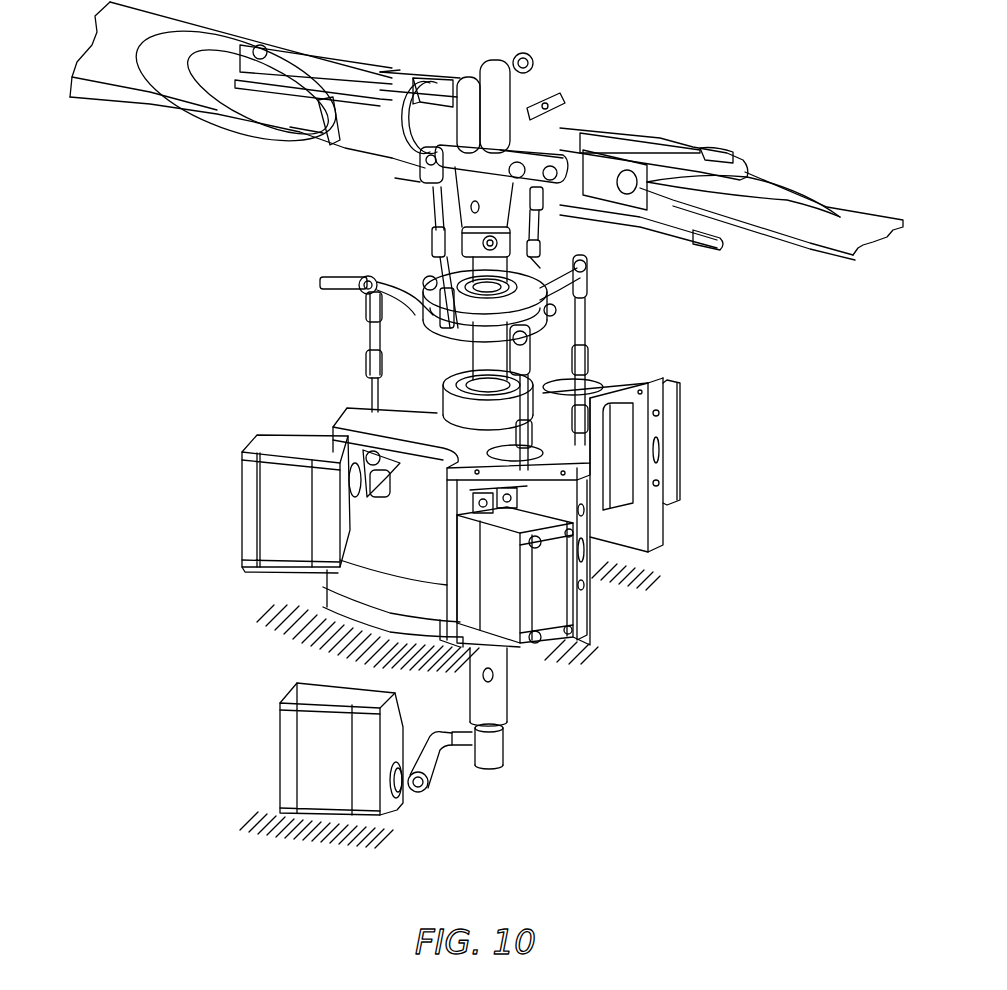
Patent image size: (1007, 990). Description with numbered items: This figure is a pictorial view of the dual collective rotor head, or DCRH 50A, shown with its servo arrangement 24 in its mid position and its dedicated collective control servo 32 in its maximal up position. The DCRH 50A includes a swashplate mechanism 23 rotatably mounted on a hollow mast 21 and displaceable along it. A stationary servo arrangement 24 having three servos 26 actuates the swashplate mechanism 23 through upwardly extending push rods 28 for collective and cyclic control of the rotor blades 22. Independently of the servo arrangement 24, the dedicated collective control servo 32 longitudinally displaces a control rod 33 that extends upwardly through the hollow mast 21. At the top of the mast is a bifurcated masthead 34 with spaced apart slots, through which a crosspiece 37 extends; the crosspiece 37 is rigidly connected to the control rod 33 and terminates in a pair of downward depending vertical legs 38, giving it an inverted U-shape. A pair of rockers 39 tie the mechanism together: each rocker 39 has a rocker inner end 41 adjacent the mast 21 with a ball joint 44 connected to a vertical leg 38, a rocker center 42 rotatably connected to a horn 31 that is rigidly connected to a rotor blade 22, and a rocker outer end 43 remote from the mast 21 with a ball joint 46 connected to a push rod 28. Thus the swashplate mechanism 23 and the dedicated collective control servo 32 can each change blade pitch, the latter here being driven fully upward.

The DCRH 50A is at (757, 63).
The rotor blade 22 is at (110, 88).
The bifurcated masthead 34 is at (575, 41).
The crosspiece 37 is at (467, 87).
The vertical leg 38 is at (423, 80).
The rocker inner end 41 is at (418, 85).
The rocker 39 is at (392, 153).
The rocker center 42 is at (392, 160).
The rocker outer end 43 is at (395, 180).
The ball joint 44 is at (525, 142).
The ball joint 46 is at (423, 168).
The horn 31 is at (505, 218).
The push rod 28 is at (420, 230).
The swashplate mechanism 23 is at (667, 316).
The mast 21 is at (483, 367).
The stationary servo arrangement 24 is at (766, 501).
The servo 26 is at (242, 490).
The control rod 33 is at (497, 733).
The dedicated collective control servo 32 is at (313, 762).